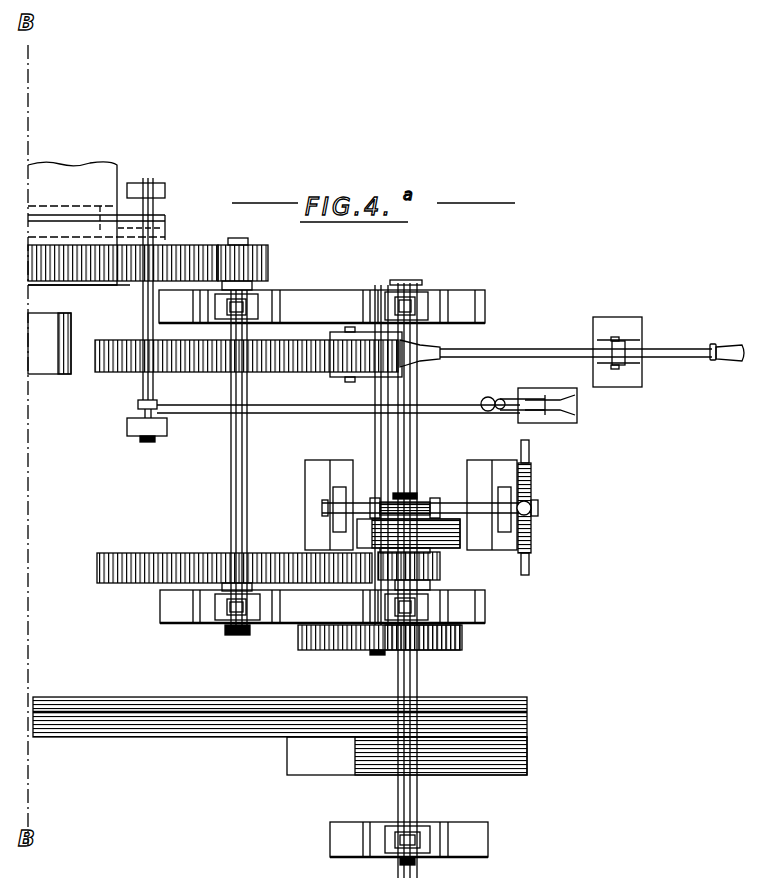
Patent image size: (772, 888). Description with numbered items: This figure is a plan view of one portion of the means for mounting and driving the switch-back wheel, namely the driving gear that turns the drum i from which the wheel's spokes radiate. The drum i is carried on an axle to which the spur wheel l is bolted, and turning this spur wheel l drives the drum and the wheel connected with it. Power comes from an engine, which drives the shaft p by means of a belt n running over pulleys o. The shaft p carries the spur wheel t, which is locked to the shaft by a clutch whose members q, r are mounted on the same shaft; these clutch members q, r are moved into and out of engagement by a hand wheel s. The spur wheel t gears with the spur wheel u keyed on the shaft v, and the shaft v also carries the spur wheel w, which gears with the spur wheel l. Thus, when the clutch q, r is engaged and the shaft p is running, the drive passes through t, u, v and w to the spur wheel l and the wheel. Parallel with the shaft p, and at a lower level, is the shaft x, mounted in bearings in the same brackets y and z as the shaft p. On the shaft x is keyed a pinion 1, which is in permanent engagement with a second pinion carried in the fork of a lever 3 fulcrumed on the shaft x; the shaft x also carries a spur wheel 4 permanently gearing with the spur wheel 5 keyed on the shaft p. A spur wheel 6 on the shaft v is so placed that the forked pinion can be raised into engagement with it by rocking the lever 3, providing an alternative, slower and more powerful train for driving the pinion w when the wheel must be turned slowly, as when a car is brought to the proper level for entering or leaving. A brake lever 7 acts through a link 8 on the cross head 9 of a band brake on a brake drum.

The drum i is at (103, 168).
The cross head 9 is at (168, 222).
The spur wheel l is at (194, 246).
The spur wheel w is at (262, 259).
The bracket z is at (478, 302).
The spur wheel 6 is at (284, 360).
The pinion 1 is at (410, 362).
The lever 3 is at (557, 351).
The link 8 is at (297, 413).
The brake lever 7 is at (516, 401).
The shaft v is at (243, 480).
The shaft x is at (377, 447).
The shaft p is at (414, 444).
The clutch member r is at (424, 500).
The clutch member q is at (456, 536).
The hand wheel s is at (531, 499).
The spur wheel u is at (162, 556).
The spur wheel t is at (430, 566).
The bracket y is at (480, 604).
The spur wheel 4 is at (335, 646).
The spur wheel 5 is at (414, 636).
The belt n is at (131, 698).
The pulley o is at (527, 717).